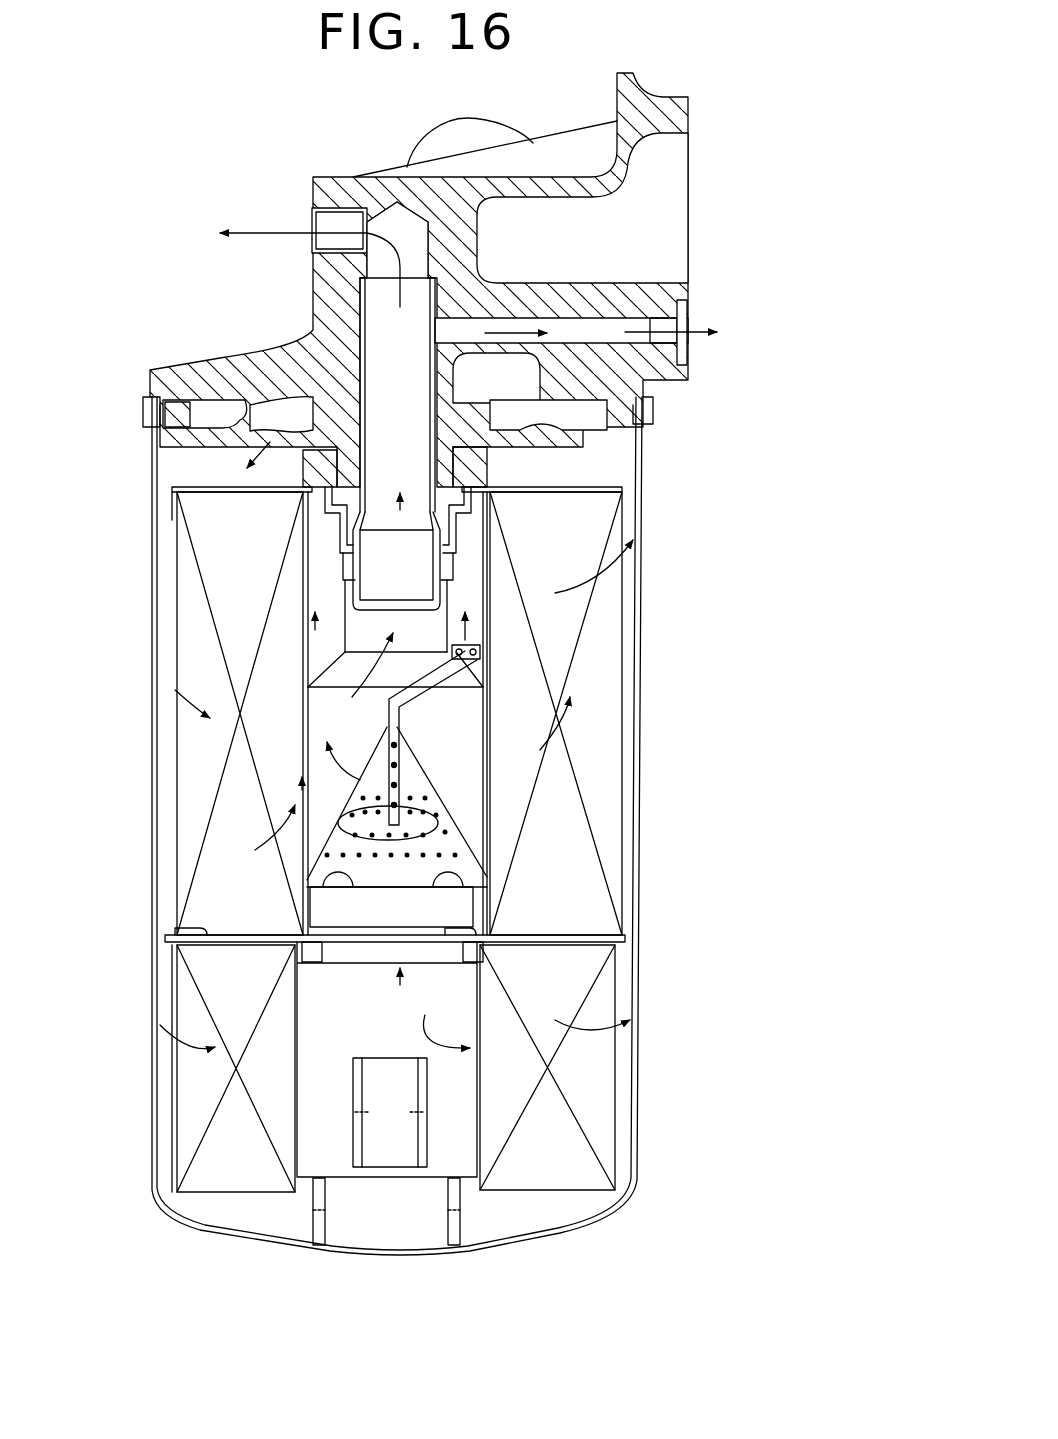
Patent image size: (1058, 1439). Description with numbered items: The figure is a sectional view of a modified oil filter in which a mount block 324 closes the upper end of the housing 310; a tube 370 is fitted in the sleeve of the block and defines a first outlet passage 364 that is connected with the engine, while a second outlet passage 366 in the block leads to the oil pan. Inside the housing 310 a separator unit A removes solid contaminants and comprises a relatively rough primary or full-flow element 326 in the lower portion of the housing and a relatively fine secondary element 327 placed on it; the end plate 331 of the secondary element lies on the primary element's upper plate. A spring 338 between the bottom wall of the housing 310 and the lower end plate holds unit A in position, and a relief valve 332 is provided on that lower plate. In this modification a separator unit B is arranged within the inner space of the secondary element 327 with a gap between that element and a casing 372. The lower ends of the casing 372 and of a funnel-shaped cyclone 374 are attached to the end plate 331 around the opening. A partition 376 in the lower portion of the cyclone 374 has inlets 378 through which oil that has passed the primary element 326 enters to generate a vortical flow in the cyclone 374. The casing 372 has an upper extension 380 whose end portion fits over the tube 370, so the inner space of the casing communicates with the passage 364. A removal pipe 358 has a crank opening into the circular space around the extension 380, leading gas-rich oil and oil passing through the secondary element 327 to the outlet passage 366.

The housing 310 is at (642, 766).
The mount block 324 is at (667, 92).
The primary or full-flow element 326 is at (197, 1075).
The secondary element 327 is at (195, 665).
The lower end plate 331 is at (170, 935).
The relief valve 332 is at (420, 1120).
The spring 338 is at (455, 1245).
The removal pipe 358 is at (412, 712).
The first outlet passage 364 is at (327, 298).
The second outlet passage 366 is at (583, 333).
The tube 370 is at (320, 333).
The casing 372 is at (475, 790).
The cyclone 374 is at (362, 782).
The partition 376 is at (375, 893).
The inlets 378 is at (327, 883).
The upper extension 380 is at (342, 623).
The separator unit A is at (170, 895).
The separator unit B is at (435, 742).